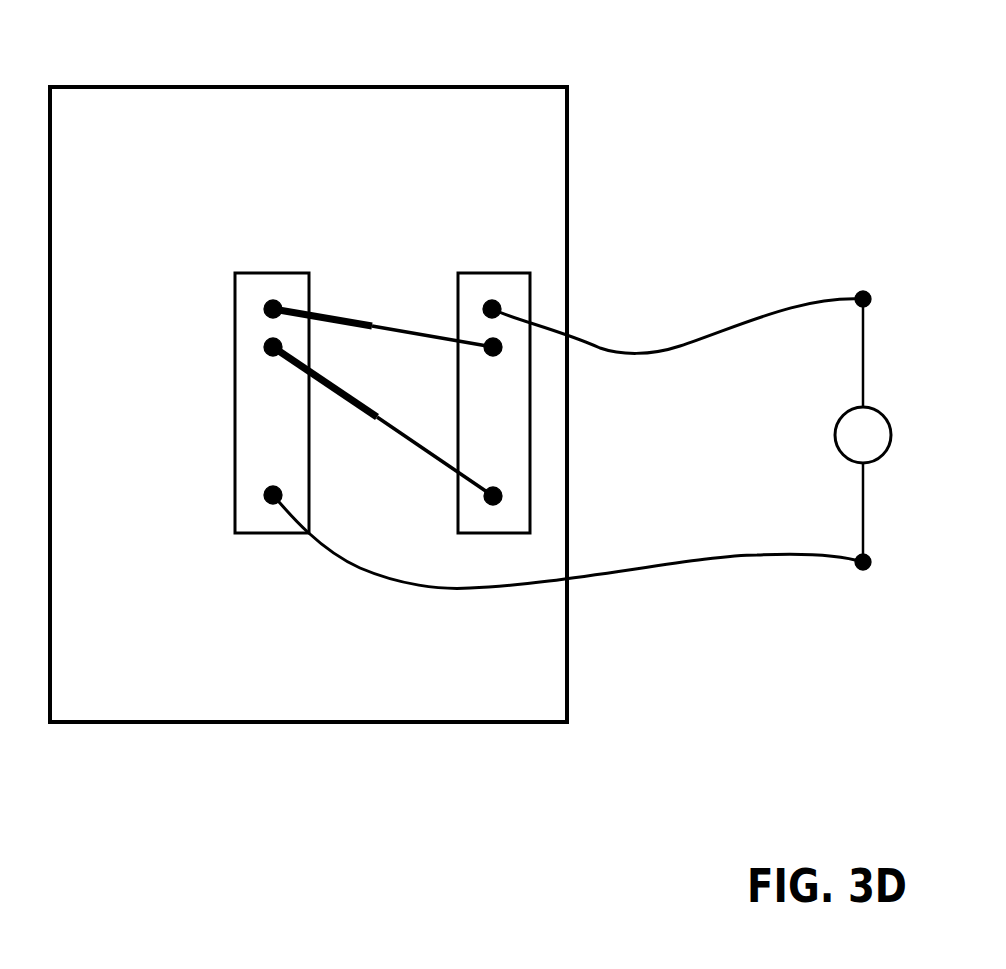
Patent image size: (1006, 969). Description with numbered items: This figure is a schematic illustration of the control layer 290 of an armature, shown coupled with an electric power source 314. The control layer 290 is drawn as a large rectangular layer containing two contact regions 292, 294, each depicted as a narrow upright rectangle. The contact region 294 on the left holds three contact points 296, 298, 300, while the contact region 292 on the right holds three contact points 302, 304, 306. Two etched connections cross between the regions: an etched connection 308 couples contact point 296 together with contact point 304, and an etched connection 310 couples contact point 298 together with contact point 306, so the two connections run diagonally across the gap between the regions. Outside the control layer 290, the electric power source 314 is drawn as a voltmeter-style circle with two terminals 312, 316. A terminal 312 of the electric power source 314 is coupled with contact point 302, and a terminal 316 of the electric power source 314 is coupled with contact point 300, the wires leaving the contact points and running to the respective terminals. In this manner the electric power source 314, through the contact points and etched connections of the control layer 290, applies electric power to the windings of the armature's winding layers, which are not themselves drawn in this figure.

The control layer 290 is at (483, 87).
The contact region 292 is at (478, 273).
The contact region 294 is at (268, 273).
The contact point 296 is at (273, 309).
The contact point 298 is at (273, 347).
The contact point 300 is at (273, 495).
The contact point 302 is at (492, 309).
The contact point 304 is at (493, 347).
The contact point 306 is at (493, 496).
The etched connection 308 is at (370, 322).
The etched connection 310 is at (377, 422).
The terminal 312 is at (863, 299).
The electric power source 314 is at (891, 435).
The terminal 316 is at (863, 562).